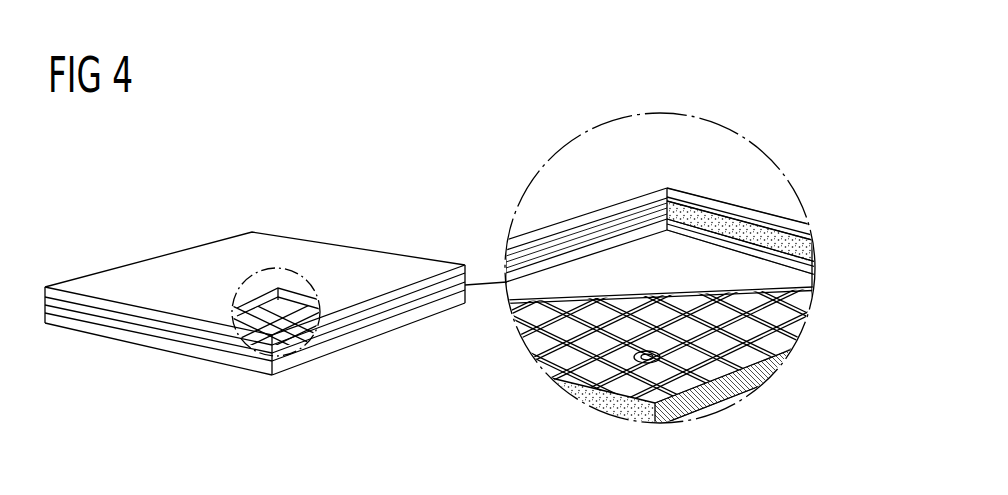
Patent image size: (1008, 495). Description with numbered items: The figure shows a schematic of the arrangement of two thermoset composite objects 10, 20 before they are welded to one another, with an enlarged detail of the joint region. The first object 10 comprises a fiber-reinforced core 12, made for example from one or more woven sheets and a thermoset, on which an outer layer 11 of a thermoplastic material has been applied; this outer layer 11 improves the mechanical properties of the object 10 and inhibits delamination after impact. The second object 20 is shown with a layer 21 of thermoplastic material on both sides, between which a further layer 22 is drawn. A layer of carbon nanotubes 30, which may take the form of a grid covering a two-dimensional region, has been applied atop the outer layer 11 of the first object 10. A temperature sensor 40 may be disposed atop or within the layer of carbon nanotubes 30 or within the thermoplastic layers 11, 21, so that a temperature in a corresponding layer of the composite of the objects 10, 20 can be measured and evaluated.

The first thermoset composite object 10 is at (442, 386).
The outer layer 11 is at (783, 367).
The fiber-reinforced core 12 is at (765, 383).
The second thermoset composite object 20 is at (70, 291).
The layer of thermoplastic material 21 is at (806, 232).
The intermediate cover sublayer 22 is at (815, 247).
The layer of carbon nanotubes 30 is at (527, 348).
The temperature sensor 40 is at (580, 398).